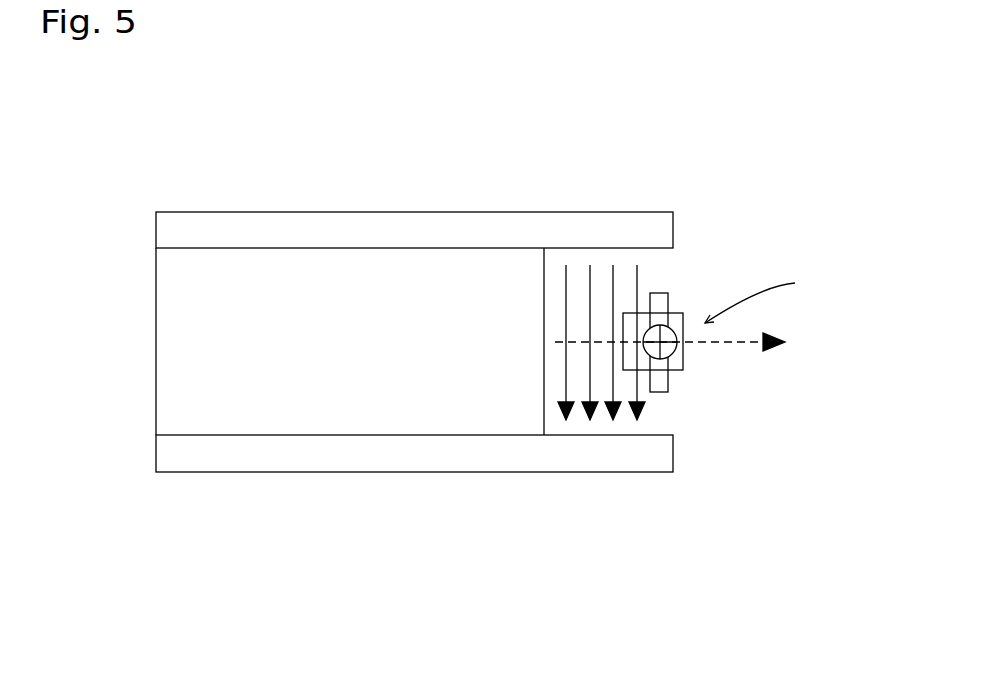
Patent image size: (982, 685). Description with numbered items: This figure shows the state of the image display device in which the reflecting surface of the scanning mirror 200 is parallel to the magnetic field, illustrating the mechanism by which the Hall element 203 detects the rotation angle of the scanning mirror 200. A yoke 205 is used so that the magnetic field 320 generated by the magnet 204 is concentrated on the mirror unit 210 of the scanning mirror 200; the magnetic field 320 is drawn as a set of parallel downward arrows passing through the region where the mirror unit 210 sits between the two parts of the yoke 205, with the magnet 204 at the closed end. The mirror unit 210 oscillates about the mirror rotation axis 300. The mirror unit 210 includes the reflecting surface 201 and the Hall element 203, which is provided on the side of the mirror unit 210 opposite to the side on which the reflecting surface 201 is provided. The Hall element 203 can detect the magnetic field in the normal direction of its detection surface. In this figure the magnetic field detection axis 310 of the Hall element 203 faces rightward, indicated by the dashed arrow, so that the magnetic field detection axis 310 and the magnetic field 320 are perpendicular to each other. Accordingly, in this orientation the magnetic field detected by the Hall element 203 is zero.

The scanning mirror 200 is at (195, 112).
The reflecting surface 201 is at (685, 372).
The Hall element 203 is at (644, 317).
The magnet 204 is at (165, 304).
The yoke 205 is at (277, 226).
The mirror unit 210 is at (771, 296).
The mirror rotation axis 300 is at (666, 338).
The magnetic field detection axis 310 is at (733, 342).
The magnetic field 320 is at (567, 268).